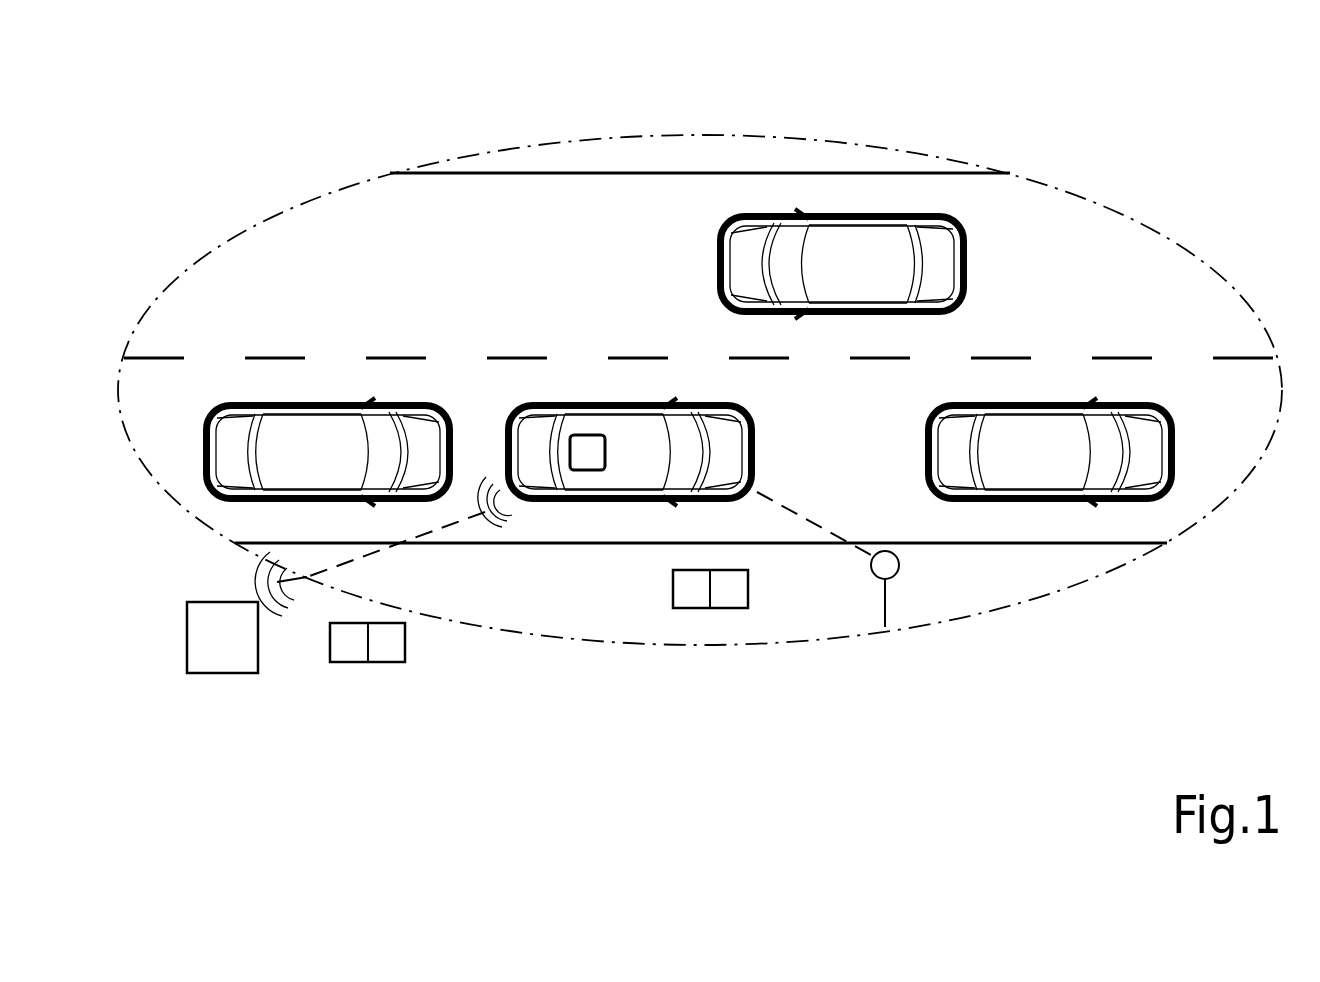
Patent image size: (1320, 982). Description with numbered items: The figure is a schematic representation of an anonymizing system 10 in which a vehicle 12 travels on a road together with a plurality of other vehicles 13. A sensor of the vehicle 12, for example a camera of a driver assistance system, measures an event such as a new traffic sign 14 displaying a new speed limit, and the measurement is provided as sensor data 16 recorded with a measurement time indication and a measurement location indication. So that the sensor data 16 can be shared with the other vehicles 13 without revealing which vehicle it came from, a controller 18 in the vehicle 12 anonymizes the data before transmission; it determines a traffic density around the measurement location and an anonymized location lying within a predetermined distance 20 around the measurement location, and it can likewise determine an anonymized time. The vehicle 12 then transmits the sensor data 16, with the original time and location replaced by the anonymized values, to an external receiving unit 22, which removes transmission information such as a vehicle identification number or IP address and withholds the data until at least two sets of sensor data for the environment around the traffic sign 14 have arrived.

The anonymizing system 10 is at (330, 146).
The vehicle 12 is at (608, 402).
The other vehicles 13 is at (835, 213).
The traffic sign 14 is at (895, 591).
The sensor data 16 is at (352, 663).
The controller 18 is at (585, 471).
The predetermined distance 20 is at (700, 133).
The external receiving unit 22 is at (222, 674).